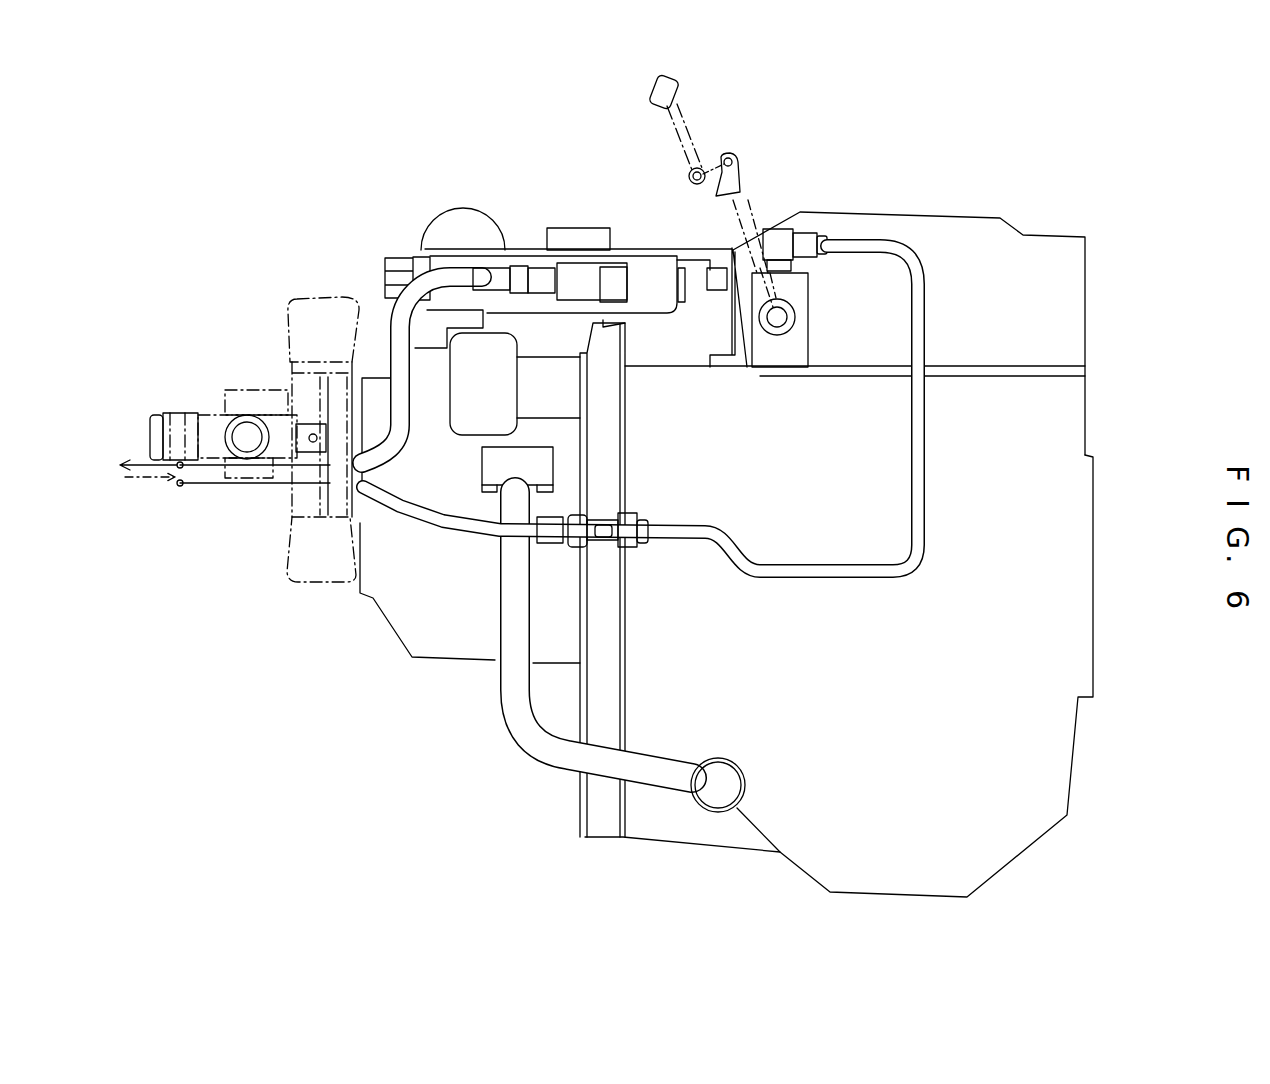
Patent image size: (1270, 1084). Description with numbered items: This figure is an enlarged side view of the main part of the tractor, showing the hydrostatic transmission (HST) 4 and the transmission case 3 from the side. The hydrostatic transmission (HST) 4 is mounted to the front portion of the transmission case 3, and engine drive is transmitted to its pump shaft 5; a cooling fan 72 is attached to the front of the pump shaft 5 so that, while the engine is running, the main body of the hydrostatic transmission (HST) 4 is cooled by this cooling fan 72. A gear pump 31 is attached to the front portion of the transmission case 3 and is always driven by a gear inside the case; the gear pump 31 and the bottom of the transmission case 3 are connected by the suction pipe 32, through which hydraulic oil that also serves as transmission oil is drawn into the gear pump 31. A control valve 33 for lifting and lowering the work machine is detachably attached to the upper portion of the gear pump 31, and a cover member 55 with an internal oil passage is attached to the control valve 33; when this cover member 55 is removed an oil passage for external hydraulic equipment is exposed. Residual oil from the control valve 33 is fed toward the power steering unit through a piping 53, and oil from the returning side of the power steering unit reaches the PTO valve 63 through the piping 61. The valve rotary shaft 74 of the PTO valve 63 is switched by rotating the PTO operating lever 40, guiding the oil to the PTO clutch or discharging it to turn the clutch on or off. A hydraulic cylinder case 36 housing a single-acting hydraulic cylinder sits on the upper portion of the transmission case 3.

The transmission case 3 is at (1053, 760).
The hydrostatic transmission (HST) 4 is at (425, 638).
The pump shaft 5 is at (303, 425).
The gear pump 31 is at (473, 385).
The suction pipe 32 is at (565, 762).
The control valve 33 is at (488, 213).
The hydraulic cylinder case 36 is at (1085, 244).
The PTO operating lever 40 is at (678, 108).
The piping 53 is at (392, 342).
The cover member 55 is at (598, 230).
The piping 61 is at (224, 488).
The PTO valve 63 is at (805, 298).
The cooling fan 72 is at (297, 297).
The valve rotary shaft 74 is at (780, 323).